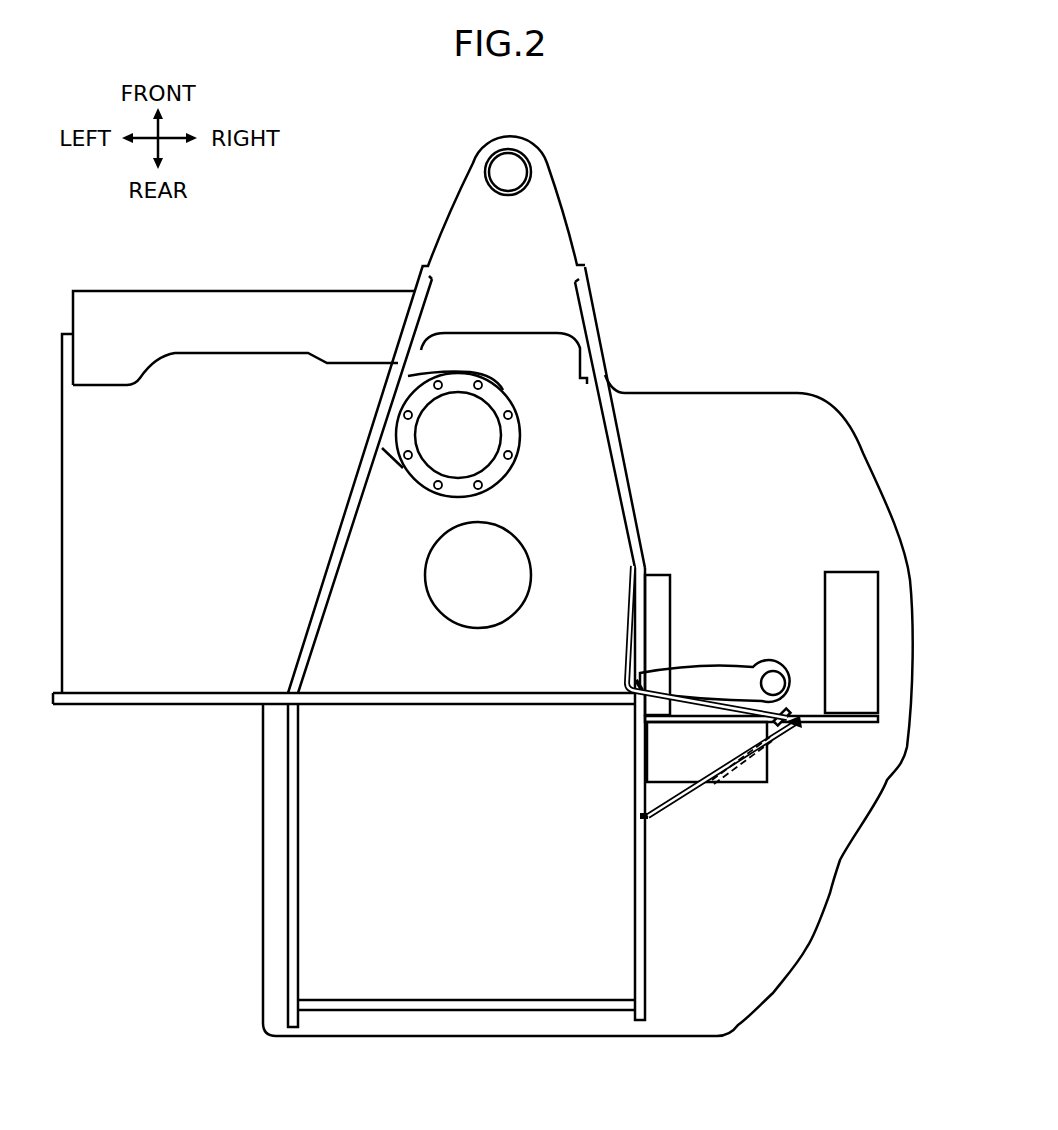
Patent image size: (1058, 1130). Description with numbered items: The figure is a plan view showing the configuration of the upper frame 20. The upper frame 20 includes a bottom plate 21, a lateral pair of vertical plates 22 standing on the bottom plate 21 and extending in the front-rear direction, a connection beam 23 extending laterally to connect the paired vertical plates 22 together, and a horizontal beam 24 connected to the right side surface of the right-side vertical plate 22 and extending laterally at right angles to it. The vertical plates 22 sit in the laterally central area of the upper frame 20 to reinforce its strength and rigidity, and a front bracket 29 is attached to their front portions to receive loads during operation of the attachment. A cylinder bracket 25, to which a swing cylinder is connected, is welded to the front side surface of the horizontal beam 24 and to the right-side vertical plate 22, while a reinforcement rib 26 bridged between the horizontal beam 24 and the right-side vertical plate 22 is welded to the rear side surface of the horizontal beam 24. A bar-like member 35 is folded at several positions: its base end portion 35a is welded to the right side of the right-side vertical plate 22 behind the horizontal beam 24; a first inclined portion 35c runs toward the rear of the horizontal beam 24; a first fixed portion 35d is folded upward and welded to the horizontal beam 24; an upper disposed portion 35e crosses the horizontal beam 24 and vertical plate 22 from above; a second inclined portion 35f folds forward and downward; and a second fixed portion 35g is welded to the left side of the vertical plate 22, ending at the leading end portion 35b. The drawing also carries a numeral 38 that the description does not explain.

The upper frame 20 is at (733, 221).
The bottom plate 21 is at (725, 393).
The vertical plate 22 is at (288, 877).
The connection beam 23 is at (403, 693).
The horizontal beam 24 is at (810, 722).
The cylinder bracket 25 is at (752, 668).
The reinforcement rib 26 is at (745, 783).
The front bracket 29 is at (558, 217).
The bar-like member 35 is at (628, 643).
The base end portion 35a is at (648, 820).
The leading end portion 35b is at (634, 570).
The first inclined portion 35c is at (683, 793).
The first fixed portion 35d is at (800, 728).
The upper disposed portion 35e is at (680, 712).
The second inclined portion 35f is at (626, 683).
The second fixed portion 35g is at (628, 575).
The pin 38 is at (645, 673).